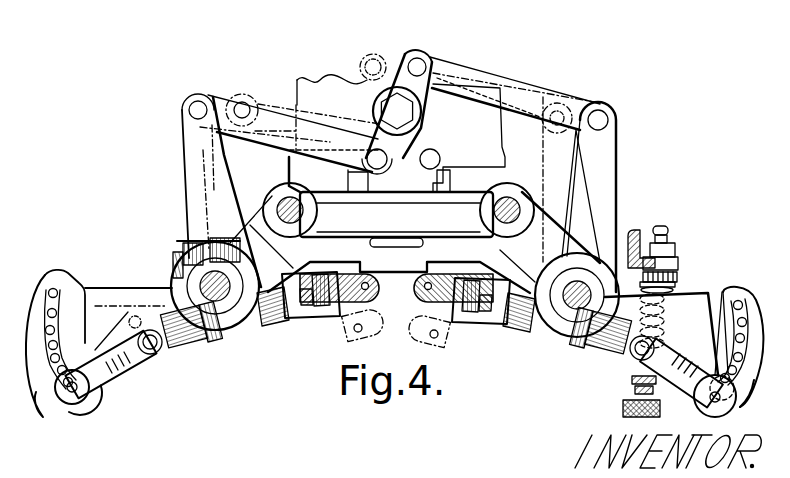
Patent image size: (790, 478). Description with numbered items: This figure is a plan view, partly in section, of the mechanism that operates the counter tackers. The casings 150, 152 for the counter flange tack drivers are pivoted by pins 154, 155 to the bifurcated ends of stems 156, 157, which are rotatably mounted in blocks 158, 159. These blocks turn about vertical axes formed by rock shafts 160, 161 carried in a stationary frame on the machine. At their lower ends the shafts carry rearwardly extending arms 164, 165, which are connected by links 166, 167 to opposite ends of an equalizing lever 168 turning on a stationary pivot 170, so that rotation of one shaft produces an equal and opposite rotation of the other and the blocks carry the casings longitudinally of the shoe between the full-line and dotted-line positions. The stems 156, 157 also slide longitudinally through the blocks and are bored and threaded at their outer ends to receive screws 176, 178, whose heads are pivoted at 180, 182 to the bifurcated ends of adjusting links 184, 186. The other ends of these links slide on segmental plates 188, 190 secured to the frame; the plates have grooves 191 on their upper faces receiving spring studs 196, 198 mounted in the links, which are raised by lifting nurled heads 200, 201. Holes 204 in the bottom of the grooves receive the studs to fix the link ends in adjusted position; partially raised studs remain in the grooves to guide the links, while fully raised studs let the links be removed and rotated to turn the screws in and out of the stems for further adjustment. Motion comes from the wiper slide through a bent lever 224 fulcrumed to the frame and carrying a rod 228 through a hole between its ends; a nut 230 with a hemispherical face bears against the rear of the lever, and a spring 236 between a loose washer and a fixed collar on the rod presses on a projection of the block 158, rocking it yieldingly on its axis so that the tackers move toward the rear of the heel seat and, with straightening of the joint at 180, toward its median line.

The casing 150 is at (430, 303).
The casing 152 is at (353, 312).
The pin 154 is at (455, 320).
The pin 155 is at (327, 328).
The stem 156 is at (515, 322).
The stem 157 is at (273, 325).
The block 158 is at (583, 352).
The block 159 is at (212, 352).
The rock shaft 160 is at (577, 302).
The rock shaft 161 is at (205, 283).
The arm 164 is at (598, 176).
The arm 165 is at (194, 164).
The link 166 is at (522, 89).
The link 167 is at (273, 123).
The equalizing lever 168 is at (411, 58).
The stationary pivot 170 is at (420, 114).
The screw 176 is at (628, 363).
The screw 178 is at (162, 356).
The pivot 180 is at (623, 407).
The pivot 182 is at (150, 352).
The adjusting link 184 is at (688, 378).
The adjusting link 186 is at (103, 397).
The segmental plate 188 is at (744, 380).
The segmental plate 190 is at (40, 288).
The groove 191 is at (56, 288).
The spring stud 196 is at (737, 410).
The spring stud 198 is at (70, 393).
The nurled head 200 is at (709, 296).
The nurled head 201 is at (78, 396).
The holes 204 is at (57, 328).
The bent lever 224 is at (632, 228).
The rod 228 is at (662, 226).
The nut 230 is at (675, 248).
The spring 236 is at (672, 287).